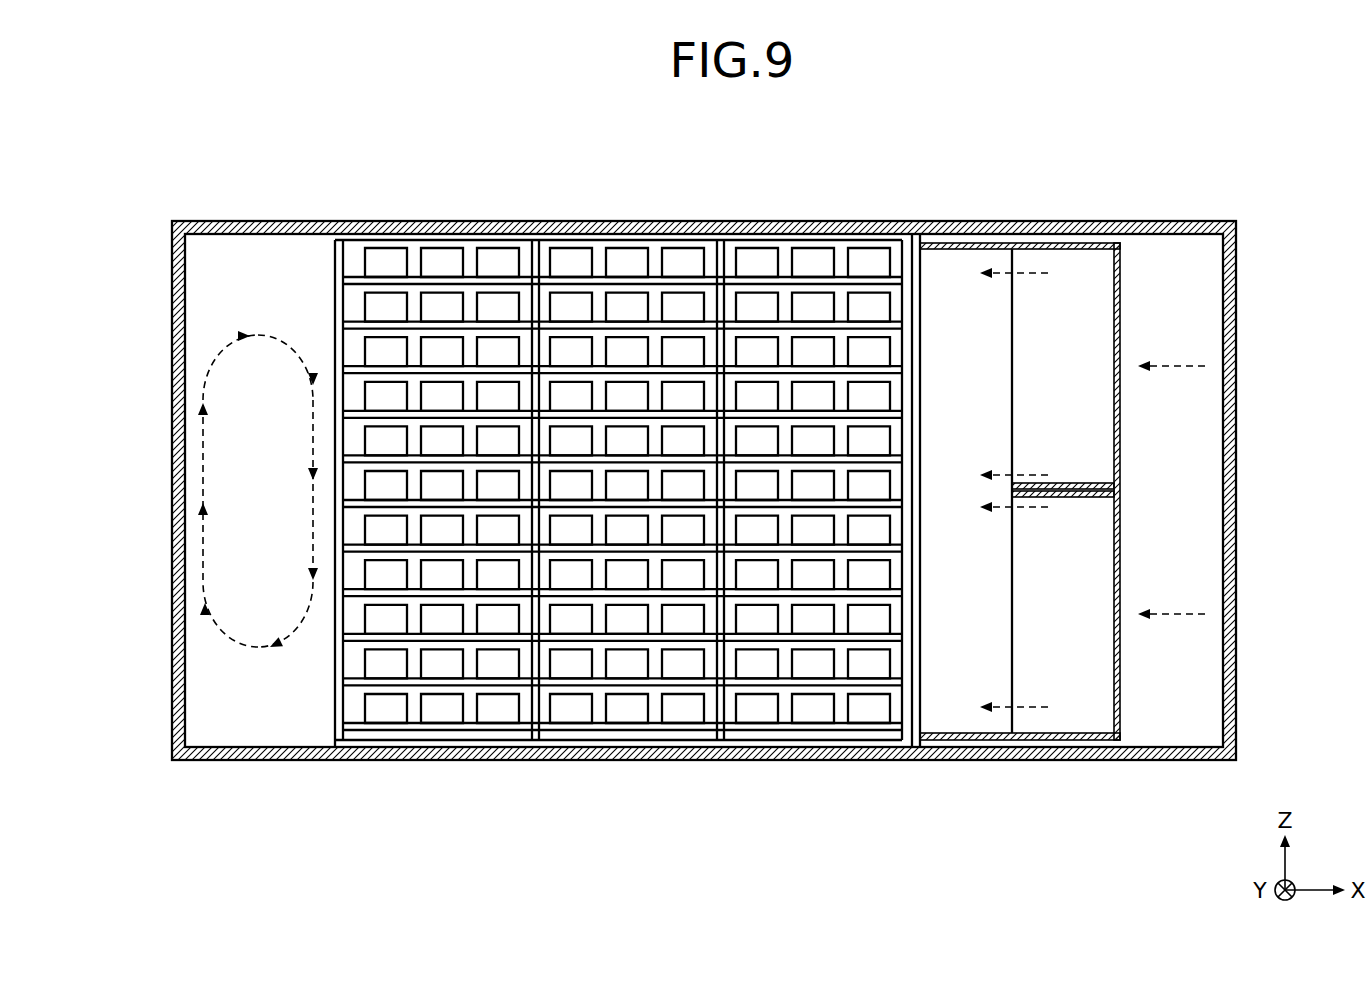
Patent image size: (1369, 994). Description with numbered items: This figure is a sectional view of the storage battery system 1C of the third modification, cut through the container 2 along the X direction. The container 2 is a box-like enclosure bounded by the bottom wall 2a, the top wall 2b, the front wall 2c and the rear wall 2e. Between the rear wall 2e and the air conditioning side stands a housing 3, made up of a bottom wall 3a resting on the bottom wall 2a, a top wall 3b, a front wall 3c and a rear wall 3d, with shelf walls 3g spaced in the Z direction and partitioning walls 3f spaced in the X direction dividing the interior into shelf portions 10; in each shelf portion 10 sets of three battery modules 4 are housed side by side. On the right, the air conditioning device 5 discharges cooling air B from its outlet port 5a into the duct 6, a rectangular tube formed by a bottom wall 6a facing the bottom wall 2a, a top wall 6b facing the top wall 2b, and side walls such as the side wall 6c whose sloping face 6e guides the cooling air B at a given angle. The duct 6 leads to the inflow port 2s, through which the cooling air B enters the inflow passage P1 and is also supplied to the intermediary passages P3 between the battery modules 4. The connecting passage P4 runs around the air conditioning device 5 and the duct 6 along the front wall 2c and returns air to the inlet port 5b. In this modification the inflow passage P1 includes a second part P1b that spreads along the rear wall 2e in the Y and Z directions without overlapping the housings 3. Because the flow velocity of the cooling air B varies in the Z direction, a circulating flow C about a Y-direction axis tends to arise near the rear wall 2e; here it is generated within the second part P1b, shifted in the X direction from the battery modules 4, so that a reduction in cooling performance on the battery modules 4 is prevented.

The storage battery system 1C is at (1238, 142).
The container 2 is at (704, 504).
The bottom wall 2a is at (812, 762).
The top wall 2b is at (1032, 222).
The front wall 2c is at (1237, 338).
The rear wall 2e is at (178, 627).
The inflow port 2s is at (907, 762).
The housing 3 is at (502, 504).
The bottom wall 3a is at (460, 742).
The top wall 3b is at (618, 242).
The front wall 3c is at (903, 700).
The rear wall 3d is at (335, 597).
The partitioning wall 3f is at (731, 300).
The shelf wall 3g is at (260, 565).
The shelf portion 10 is at (385, 318).
The battery module 4 is at (496, 504).
The air conditioning device 5 is at (1143, 491).
The outlet port 5a is at (1012, 315).
The inlet port 5b is at (1123, 432).
The duct 6 is at (1080, 499).
The bottom wall 6a is at (920, 700).
The top wall 6b is at (975, 248).
The side wall 6c is at (946, 273).
The sloping face 6e is at (940, 448).
The cooling air B is at (1030, 507).
The circulating flow C is at (203, 443).
The inflow passage P1 is at (278, 705).
The second part P1b is at (260, 535).
The intermediary passage P3 is at (812, 688).
The connecting passage P4 is at (1125, 596).